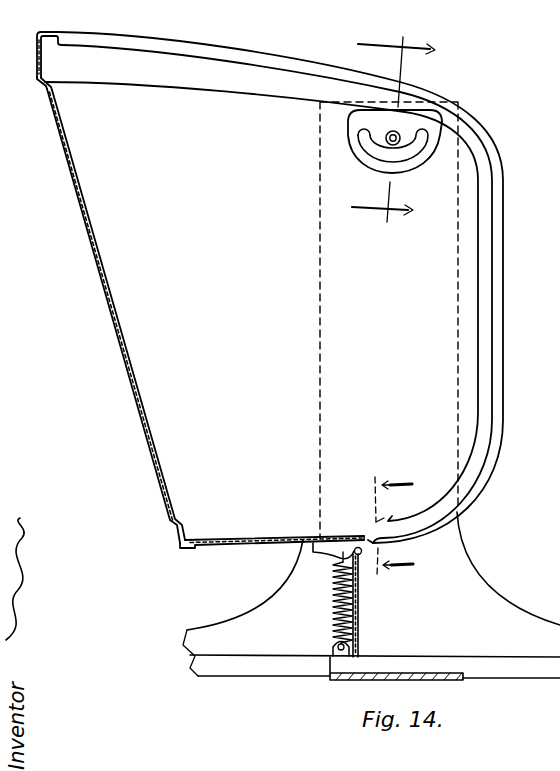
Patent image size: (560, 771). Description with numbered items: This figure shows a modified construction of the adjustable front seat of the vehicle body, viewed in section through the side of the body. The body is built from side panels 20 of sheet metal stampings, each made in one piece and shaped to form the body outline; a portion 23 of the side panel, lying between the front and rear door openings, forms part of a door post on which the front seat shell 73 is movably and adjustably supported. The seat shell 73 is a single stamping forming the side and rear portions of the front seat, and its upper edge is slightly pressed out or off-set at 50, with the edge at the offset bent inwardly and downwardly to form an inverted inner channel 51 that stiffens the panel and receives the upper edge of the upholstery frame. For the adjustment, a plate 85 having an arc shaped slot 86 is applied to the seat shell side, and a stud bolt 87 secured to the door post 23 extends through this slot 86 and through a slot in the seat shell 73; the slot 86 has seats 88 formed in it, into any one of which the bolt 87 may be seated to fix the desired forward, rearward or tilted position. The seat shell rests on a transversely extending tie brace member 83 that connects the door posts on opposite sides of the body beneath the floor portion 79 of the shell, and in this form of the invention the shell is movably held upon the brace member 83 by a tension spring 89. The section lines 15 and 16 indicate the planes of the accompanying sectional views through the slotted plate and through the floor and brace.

The section line 15- 15 is at (393, 131).
The section line 16- 16 is at (384, 527).
The side panel 20 is at (467, 578).
The door post portion 23 is at (478, 518).
The offset portion 50 is at (39, 72).
The inverted inner channel 51 is at (44, 43).
The front seat shell 73 is at (96, 208).
The floor portion 79 is at (248, 538).
The tie brace member 83 is at (358, 625).
The plate 85 is at (420, 157).
The arc shaped slot 86 is at (383, 150).
The stud bolt 87 is at (388, 143).
The seat 88 is at (360, 135).
The tension spring 89 is at (333, 608).